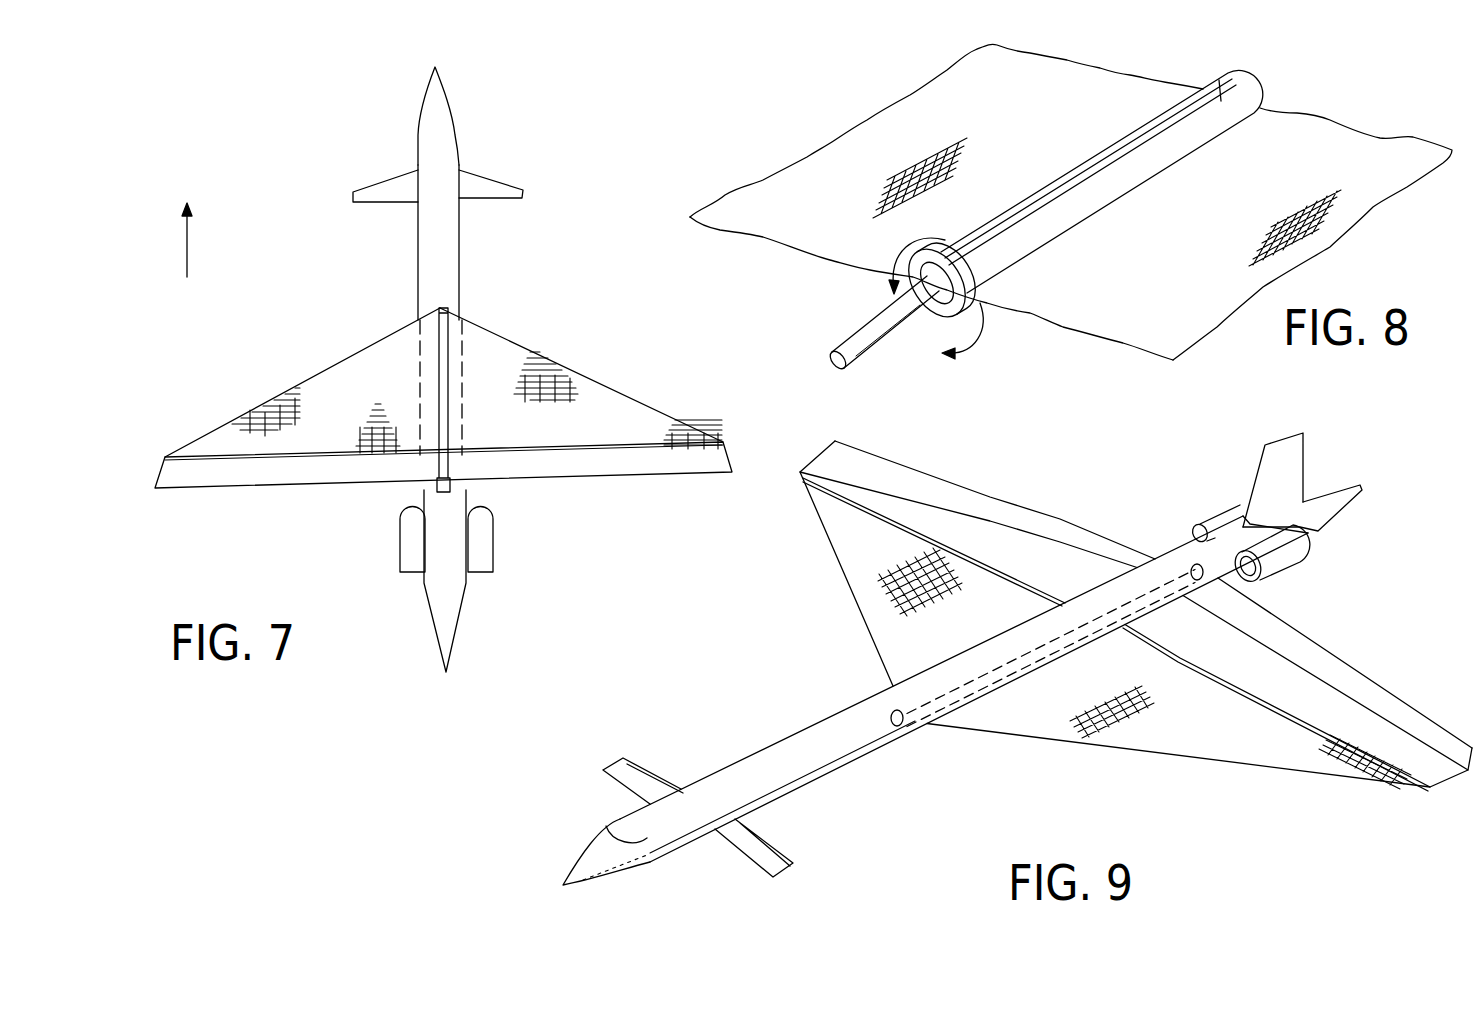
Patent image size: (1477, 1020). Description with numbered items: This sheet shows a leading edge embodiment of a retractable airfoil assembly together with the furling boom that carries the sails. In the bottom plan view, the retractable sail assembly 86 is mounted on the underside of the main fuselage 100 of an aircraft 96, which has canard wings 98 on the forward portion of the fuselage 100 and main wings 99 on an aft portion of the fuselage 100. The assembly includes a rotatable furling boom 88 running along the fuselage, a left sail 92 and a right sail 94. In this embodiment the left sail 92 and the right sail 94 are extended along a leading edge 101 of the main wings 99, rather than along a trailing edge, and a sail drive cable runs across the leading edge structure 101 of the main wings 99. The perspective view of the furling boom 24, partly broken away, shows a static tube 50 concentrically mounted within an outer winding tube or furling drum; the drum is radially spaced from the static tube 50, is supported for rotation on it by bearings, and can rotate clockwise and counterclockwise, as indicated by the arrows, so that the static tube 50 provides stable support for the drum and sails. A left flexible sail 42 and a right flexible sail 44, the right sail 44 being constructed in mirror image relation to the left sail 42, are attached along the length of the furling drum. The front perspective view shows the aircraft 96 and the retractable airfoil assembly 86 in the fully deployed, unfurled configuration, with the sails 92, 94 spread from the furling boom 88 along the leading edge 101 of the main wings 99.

In FIG. 8, the furling boom 24 is at (1223, 81).
In FIG. 8, the left flexible sail 42 is at (1303, 138).
In FIG. 8, the right flexible sail 44 is at (855, 137).
In FIG. 8, the static tube 50 is at (840, 342).
In FIG. 7, the retractable sail assembly 86 is at (372, 334).
In FIG. 9, the retractable sail assembly 86 is at (1125, 625).
In FIG. 7, the rotatable furling boom 88 is at (440, 463).
In FIG. 9, the rotatable furling boom 88 is at (950, 714).
In FIG. 7, the left sail 92 is at (272, 423).
In FIG. 9, the left sail 92 is at (1230, 742).
In FIG. 7, the right sail 94 is at (598, 395).
In FIG. 9, the right sail 94 is at (878, 598).
In FIG. 7, the aircraft 96 is at (506, 282).
In FIG. 9, the aircraft 96 is at (766, 687).
In FIG. 7, the canard wings 98 is at (391, 178).
In FIG. 9, the canard wings 98 is at (612, 782).
In FIG. 7, the main wings 99 is at (590, 466).
In FIG. 9, the main wings 99 is at (1308, 698).
In FIG. 7, the fuselage 100 is at (433, 243).
In FIG. 9, the fuselage 100 is at (782, 777).
In FIG. 7, the leading edge 101 is at (520, 447).
In FIG. 9, the leading edge 101 is at (1233, 690).